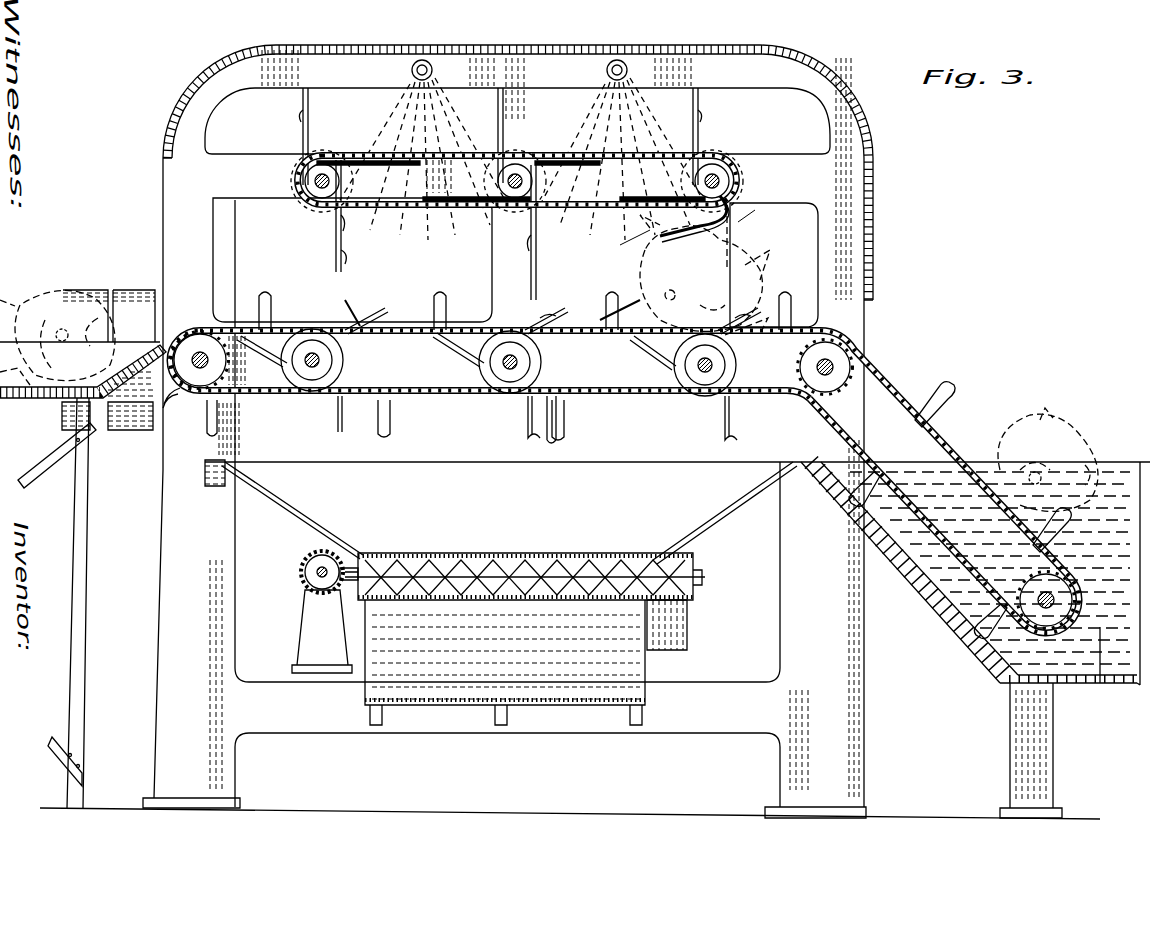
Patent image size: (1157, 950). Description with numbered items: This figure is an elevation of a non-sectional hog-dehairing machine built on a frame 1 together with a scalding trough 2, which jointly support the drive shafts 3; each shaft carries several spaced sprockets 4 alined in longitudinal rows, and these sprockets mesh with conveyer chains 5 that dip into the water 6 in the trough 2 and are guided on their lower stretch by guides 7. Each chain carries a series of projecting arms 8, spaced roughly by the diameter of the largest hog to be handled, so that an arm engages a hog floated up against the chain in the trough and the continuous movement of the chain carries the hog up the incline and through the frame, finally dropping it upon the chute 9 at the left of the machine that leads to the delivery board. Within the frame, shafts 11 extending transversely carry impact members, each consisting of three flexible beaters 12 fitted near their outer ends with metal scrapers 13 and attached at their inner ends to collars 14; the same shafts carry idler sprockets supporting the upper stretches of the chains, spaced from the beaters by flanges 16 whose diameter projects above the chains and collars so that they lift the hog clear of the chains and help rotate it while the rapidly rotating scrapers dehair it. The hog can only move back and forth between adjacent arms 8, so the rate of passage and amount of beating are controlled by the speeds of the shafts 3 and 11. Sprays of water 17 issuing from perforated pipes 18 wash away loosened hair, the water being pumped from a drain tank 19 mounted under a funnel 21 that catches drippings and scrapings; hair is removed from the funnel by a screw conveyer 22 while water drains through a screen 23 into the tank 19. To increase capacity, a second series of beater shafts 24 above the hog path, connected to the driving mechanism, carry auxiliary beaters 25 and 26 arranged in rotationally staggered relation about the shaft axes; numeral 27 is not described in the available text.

The frame 1 is at (850, 270).
The scalding trough 2 is at (960, 617).
The drive shaft 3 is at (198, 368).
The sprocket 4 is at (182, 318).
The conveyer chain 5 is at (893, 392).
The water 6 is at (995, 613).
The guide 7 is at (618, 402).
The projecting arm 8 is at (258, 303).
The chute 9 is at (83, 549).
The beater shaft 11 is at (330, 368).
The flexible beater 12 is at (424, 312).
The metal scraper 13 is at (486, 370).
The collar 14 is at (338, 350).
The flange 16 is at (481, 377).
The spray of water 17 is at (560, 653).
The perforated pipe 18 is at (430, 62).
The drain tank 19 is at (647, 667).
The funnel 21 is at (722, 494).
The screw conveyer 22 is at (694, 596).
The screen 23 is at (433, 602).
The beater shaft 24 is at (517, 180).
The beater 25 is at (308, 113).
The beater 26 is at (494, 191).
The upper belt roller 27 is at (316, 190).